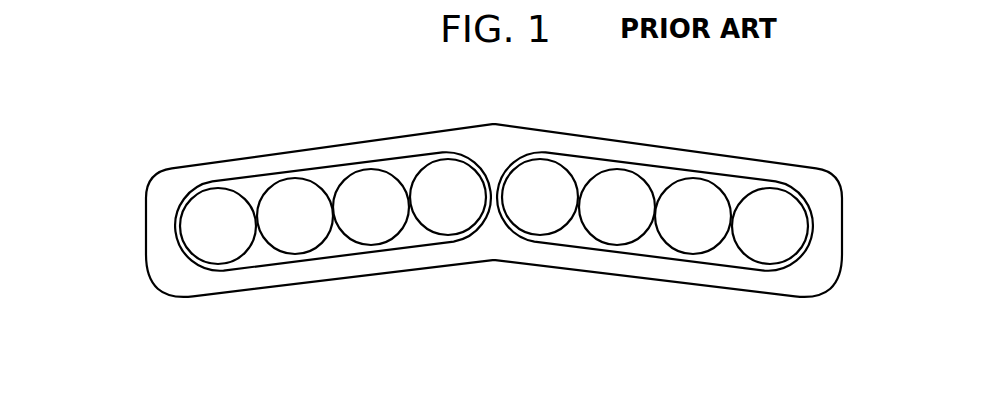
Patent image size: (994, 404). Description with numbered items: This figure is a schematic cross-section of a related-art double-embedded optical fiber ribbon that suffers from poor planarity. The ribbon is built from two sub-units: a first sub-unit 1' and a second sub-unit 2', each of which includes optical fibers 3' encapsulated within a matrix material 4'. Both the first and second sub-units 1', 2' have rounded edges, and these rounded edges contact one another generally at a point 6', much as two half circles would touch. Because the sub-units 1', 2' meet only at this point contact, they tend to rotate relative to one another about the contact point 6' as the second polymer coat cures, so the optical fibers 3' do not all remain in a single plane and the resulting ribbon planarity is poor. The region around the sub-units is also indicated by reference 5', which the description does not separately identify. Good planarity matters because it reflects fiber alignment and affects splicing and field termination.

The first sub-unit 1' is at (333, 259).
The second sub-unit 2' is at (655, 259).
The optical fibers 3' is at (461, 194).
The matrix material 4' is at (494, 196).
The bending portion of jacket 5' is at (561, 314).
The contact point 6' is at (473, 278).